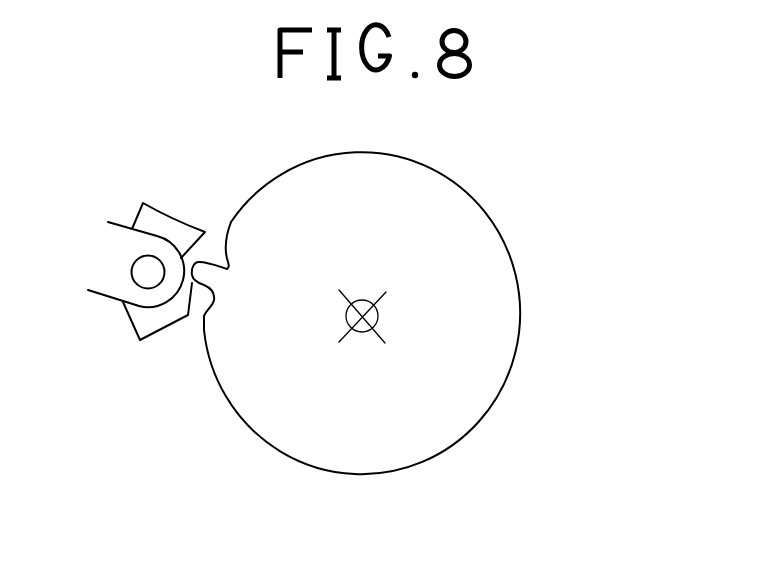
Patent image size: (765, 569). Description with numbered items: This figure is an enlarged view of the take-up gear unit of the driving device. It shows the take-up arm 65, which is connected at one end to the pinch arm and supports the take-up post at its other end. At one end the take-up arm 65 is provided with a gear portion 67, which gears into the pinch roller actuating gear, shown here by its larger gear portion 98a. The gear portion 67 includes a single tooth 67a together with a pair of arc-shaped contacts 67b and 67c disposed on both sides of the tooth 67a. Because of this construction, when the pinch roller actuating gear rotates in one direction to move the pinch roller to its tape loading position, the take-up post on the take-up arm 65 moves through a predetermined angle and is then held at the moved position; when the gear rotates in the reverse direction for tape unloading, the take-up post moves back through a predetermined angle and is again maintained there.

The larger gear portion 98a is at (353, 467).
The tooth 67a is at (193, 277).
The take-up arm 65 is at (102, 288).
The gear portion 67 is at (152, 289).
The arc-shaped contact 67b is at (176, 228).
The arc-shaped contact 67c is at (178, 320).